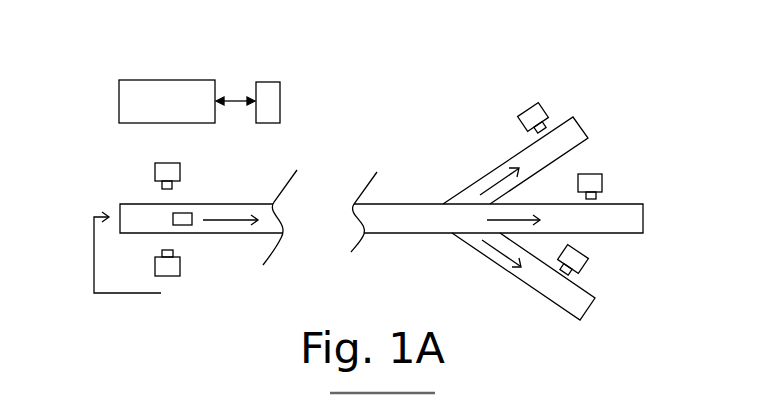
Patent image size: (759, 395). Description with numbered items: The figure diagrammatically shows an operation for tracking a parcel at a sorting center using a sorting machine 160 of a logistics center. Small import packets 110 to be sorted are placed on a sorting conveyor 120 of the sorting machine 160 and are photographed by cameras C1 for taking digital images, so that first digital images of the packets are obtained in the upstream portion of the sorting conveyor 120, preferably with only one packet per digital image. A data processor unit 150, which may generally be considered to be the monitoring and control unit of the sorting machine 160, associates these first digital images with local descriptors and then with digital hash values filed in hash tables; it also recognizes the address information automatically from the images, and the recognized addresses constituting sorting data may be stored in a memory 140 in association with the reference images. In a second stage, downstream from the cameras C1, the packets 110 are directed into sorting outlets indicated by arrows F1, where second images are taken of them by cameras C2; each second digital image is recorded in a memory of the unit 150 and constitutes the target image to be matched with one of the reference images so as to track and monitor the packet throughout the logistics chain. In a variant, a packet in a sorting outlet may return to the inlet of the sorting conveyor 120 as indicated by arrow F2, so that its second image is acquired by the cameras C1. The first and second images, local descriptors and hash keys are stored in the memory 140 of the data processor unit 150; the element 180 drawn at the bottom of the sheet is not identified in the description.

The sorting machine 160 is at (87, 116).
The data processor unit 150 is at (145, 79).
The memory 140 is at (268, 82).
The sorting conveyor 120 is at (133, 235).
The small import packets 110 is at (184, 211).
The cameras C1 is at (156, 166).
The arrow F2 is at (127, 296).
The arrows F1 is at (497, 185).
The cameras C2 is at (545, 106).
The display device 180 is at (463, 390).